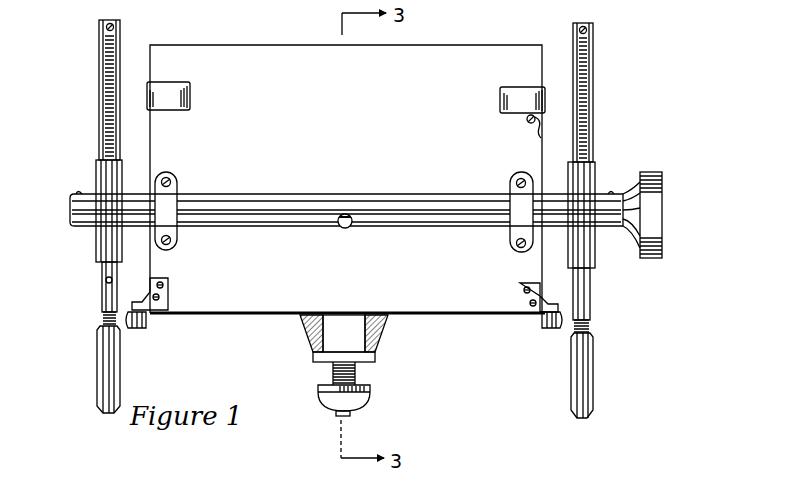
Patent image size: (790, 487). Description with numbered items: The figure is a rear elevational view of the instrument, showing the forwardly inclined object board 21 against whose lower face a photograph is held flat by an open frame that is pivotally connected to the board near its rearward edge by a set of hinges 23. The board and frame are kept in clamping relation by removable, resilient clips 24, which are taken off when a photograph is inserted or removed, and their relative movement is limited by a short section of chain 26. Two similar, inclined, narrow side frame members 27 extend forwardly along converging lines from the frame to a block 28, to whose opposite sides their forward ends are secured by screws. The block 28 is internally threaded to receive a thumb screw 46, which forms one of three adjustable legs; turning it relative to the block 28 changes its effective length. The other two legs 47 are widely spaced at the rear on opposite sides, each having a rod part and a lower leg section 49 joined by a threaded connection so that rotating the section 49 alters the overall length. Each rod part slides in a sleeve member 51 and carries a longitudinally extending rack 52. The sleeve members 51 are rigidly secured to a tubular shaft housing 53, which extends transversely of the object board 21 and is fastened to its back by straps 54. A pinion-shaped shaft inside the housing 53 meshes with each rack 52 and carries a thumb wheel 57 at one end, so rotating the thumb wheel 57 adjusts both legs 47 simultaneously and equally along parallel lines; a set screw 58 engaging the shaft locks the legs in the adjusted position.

The object board 21 is at (480, 48).
The hinges 23 is at (146, 324).
The resilient clips 24 is at (191, 97).
The chain 26 is at (538, 127).
The side frame members 27 is at (312, 326).
The block 28 is at (352, 346).
The thumb screw 46 is at (368, 396).
The legs 47 is at (97, 50).
The leg section 49 is at (118, 376).
The sleeve member 51 is at (95, 172).
The rack 52 is at (590, 108).
The tubular shaft housing 53 is at (298, 194).
The straps 54 is at (178, 186).
The thumb wheel 57 is at (663, 210).
The set screw 58 is at (345, 229).